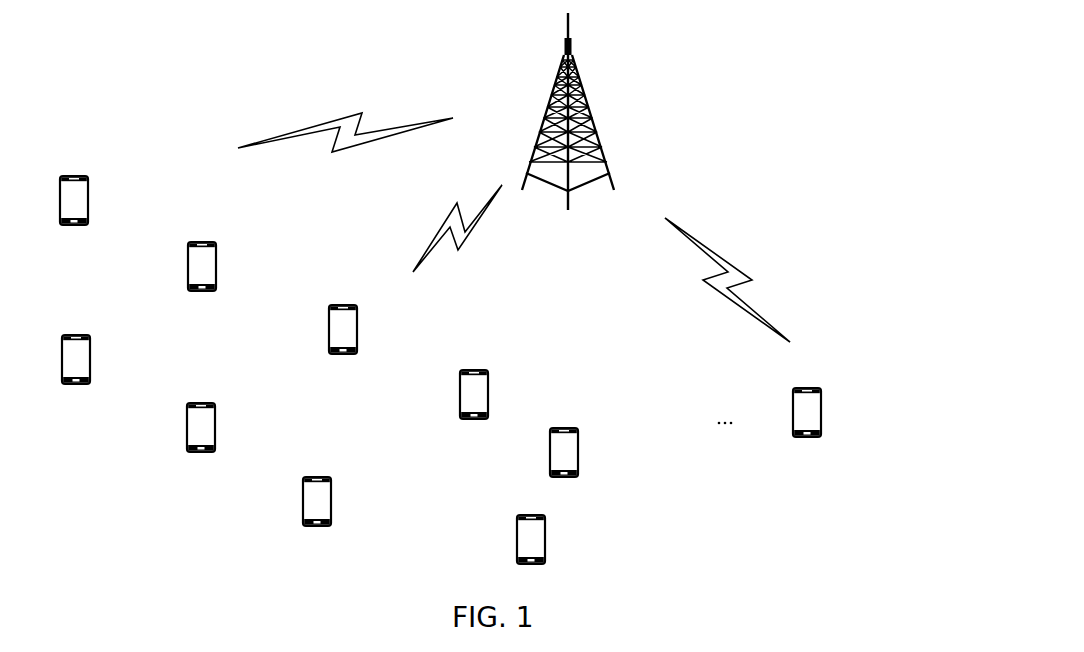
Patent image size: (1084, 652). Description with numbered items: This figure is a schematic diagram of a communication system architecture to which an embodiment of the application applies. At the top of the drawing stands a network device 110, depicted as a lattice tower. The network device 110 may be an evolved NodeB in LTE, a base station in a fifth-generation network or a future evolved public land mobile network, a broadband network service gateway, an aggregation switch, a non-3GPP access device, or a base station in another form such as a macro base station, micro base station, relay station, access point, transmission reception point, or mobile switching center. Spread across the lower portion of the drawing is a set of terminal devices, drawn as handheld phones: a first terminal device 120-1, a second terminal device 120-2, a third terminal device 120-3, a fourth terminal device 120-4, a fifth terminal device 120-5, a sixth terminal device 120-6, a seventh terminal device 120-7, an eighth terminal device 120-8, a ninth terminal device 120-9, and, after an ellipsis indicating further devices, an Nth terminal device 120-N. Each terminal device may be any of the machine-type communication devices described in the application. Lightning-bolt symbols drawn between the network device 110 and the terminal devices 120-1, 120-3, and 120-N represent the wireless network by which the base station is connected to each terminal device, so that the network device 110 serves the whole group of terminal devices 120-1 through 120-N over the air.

The network device 110 is at (606, 93).
The terminal device 120-1 is at (97, 190).
The terminal device 120-2 is at (223, 260).
The terminal device 120-3 is at (368, 328).
The terminal device 120-4 is at (498, 377).
The terminal device 120-5 is at (588, 450).
The terminal device 120-6 is at (95, 360).
The terminal device 120-7 is at (228, 420).
The terminal device 120-8 is at (340, 493).
The terminal device 120-9 is at (555, 540).
The terminal device 120-N is at (822, 397).